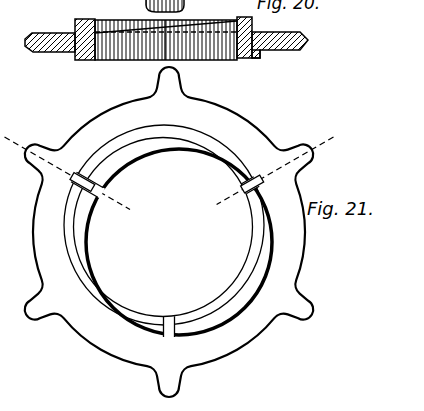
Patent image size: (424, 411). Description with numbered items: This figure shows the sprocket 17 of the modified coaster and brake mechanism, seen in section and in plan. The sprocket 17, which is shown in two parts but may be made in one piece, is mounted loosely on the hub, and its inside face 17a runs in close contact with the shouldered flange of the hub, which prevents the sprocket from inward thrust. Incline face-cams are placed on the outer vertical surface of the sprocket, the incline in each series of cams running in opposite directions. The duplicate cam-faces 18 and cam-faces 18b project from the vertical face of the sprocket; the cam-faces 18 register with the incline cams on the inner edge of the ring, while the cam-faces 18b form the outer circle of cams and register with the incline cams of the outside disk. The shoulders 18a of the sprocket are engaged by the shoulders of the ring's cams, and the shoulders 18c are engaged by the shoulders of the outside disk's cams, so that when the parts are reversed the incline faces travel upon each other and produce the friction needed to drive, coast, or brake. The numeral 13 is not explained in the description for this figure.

In FIG. 21, the housing 13 is at (9, 337).
In FIG. 20, the sprocket 17 is at (312, 43).
In FIG. 20, the inside face of the sprocket 17a is at (250, 62).
In FIG. 20, the cam-faces 18 is at (97, 20).
In FIG. 21, the cam-faces 18 is at (82, 258).
In FIG. 20, the shoulders on sprocket 18a is at (257, 23).
In FIG. 21, the shoulders on sprocket 18a is at (266, 170).
In FIG. 21, the cam-faces 18b is at (272, 241).
In FIG. 21, the shoulders on sprocket 18c is at (84, 178).